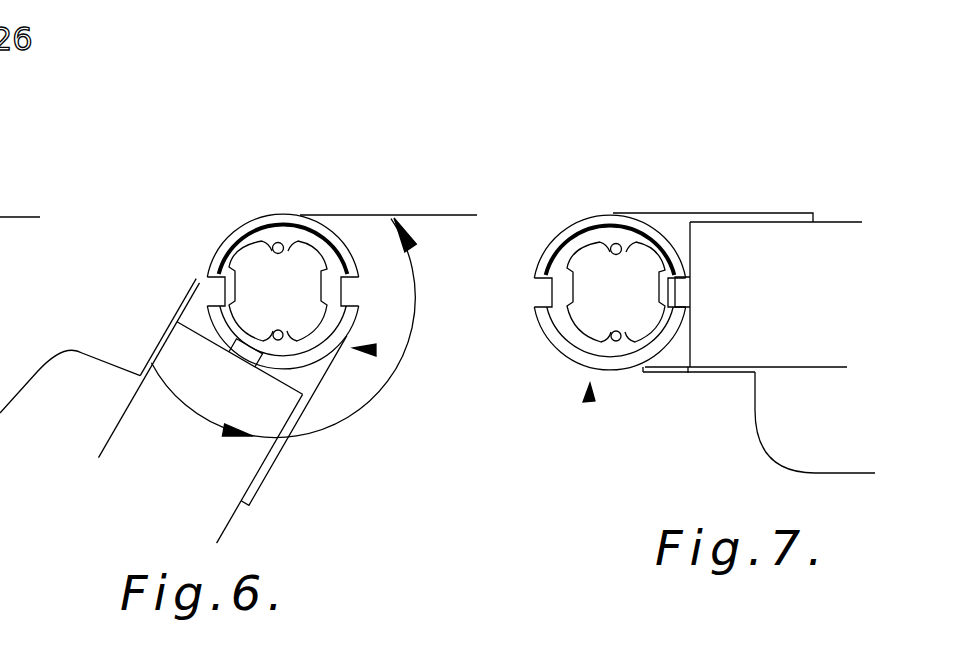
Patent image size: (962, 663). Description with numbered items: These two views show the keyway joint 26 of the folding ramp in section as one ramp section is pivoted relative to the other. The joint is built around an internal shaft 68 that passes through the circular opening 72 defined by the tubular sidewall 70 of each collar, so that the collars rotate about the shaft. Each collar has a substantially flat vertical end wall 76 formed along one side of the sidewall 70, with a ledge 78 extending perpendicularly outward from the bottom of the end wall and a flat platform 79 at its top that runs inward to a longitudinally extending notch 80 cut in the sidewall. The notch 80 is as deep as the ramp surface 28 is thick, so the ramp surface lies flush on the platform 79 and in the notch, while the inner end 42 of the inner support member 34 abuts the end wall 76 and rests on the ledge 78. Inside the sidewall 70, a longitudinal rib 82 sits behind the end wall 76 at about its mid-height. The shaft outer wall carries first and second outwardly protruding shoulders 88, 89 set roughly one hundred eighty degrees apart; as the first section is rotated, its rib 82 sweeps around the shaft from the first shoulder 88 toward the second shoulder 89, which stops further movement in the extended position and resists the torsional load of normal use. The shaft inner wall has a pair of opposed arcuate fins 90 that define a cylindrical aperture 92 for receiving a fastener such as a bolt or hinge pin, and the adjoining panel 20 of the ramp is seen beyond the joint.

In FIG. 6, the panel 20 is at (45, 382).
In FIG. 7, the panel 20 is at (798, 447).
In FIG. 6, the keyway joint 26 is at (338, 100).
In FIG. 7, the keyway joint 26 is at (715, 100).
In FIG. 6, the ramp surface 28 is at (153, 327).
In FIG. 7, the ramp surface 28 is at (702, 372).
In FIG. 6, the inner support member 34 is at (190, 497).
In FIG. 7, the inner support member 34 is at (830, 237).
In FIG. 6, the inner end 42 is at (340, 424).
In FIG. 7, the inner end 42 is at (676, 232).
In FIG. 6, the internal shaft 68 is at (327, 231).
In FIG. 7, the internal shaft 68 is at (608, 228).
In FIG. 6, the tubular sidewall 70 is at (254, 222).
In FIG. 7, the tubular sidewall 70 is at (558, 215).
In FIG. 6, the circular opening 72 is at (205, 262).
In FIG. 7, the circular opening 72 is at (560, 345).
In FIG. 6, the end wall 76 is at (275, 378).
In FIG. 7, the end wall 76 is at (690, 343).
In FIG. 6, the ledge 78 is at (257, 488).
In FIG. 7, the ledge 78 is at (783, 215).
In FIG. 7, the platform 79 is at (687, 368).
In FIG. 6, the notch 80 is at (196, 291).
In FIG. 7, the notch 80 is at (643, 375).
In FIG. 6, the longitudinal rib 82 is at (243, 353).
In FIG. 7, the longitudinal rib 82 is at (683, 298).
In FIG. 6, the first shoulder 88 is at (200, 284).
In FIG. 7, the first shoulder 88 is at (546, 279).
In FIG. 6, the second shoulder 89 is at (345, 292).
In FIG. 7, the second shoulder 89 is at (677, 273).
In FIG. 6, the fin 90 is at (278, 328).
In FIG. 7, the fin 90 is at (614, 325).
In FIG. 6, the cylindrical aperture 92 is at (278, 254).
In FIG. 7, the cylindrical aperture 92 is at (614, 254).